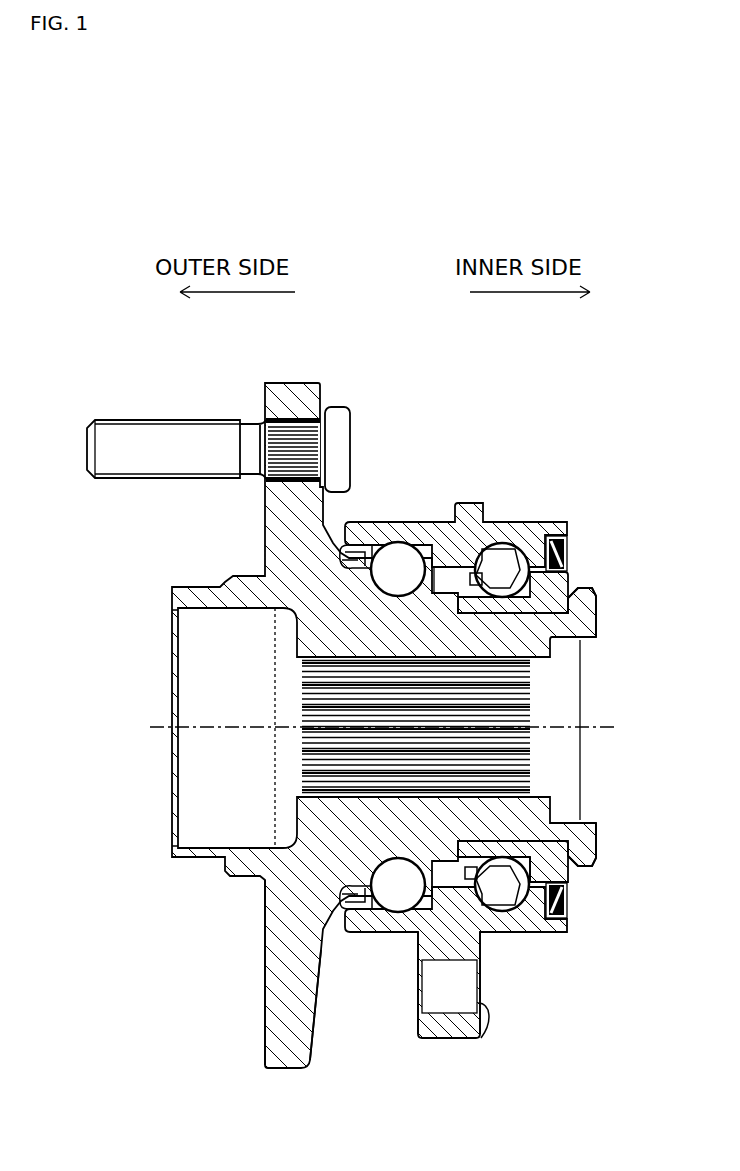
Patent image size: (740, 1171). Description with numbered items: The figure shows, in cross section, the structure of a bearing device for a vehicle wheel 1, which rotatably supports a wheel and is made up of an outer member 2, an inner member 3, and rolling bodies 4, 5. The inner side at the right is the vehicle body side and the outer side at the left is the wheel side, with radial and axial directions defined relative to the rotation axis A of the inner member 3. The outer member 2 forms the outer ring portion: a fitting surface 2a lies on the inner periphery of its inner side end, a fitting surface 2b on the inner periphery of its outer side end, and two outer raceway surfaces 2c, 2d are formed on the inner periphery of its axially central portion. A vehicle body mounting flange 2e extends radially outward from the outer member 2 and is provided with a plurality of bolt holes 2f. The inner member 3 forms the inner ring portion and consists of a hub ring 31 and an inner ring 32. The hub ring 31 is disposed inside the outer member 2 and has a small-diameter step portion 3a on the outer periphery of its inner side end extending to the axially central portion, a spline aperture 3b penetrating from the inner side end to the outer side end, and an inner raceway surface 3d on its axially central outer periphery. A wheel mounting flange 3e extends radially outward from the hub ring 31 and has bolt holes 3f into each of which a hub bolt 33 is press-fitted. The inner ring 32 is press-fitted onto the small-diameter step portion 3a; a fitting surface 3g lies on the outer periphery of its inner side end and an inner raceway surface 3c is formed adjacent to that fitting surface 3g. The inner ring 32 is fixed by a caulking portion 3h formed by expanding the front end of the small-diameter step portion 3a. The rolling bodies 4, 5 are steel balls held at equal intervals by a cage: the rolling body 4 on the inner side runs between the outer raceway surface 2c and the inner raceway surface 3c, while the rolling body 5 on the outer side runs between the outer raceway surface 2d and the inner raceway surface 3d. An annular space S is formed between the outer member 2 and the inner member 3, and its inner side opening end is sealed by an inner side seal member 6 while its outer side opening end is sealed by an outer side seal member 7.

The bearing device for a vehicle wheel 1 is at (377, 751).
The outer member 2 is at (470, 505).
The fitting surface 2a is at (549, 921).
The fitting surface 2b is at (365, 916).
The outer raceway surface 2c is at (499, 915).
The outer raceway surface 2d is at (395, 914).
The vehicle body mounting flange 2e is at (452, 1038).
The bolt hole 2f is at (487, 1012).
The inner member 3 is at (660, 863).
The small-diameter step portion 3a is at (535, 606).
The spline aperture 3b is at (300, 770).
The inner raceway surface 3c is at (510, 868).
The inner raceway surface 3d is at (393, 870).
The wheel mounting flange 3e is at (283, 1070).
The bolt hole 3f is at (265, 414).
The fitting surface 3g is at (567, 842).
The caulking portion 3h is at (588, 598).
The rolling body 4 is at (510, 590).
The rolling body 5 is at (397, 588).
The inner side seal member 6 is at (553, 538).
The outer side seal member 7 is at (348, 541).
The hub ring 31 is at (597, 843).
The inner ring 32 is at (567, 870).
The hub bolt 33 is at (142, 418).
The annular space S is at (453, 580).
The rotation axis A is at (394, 728).